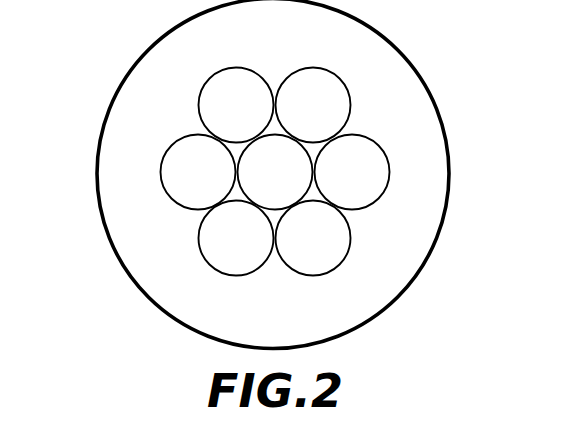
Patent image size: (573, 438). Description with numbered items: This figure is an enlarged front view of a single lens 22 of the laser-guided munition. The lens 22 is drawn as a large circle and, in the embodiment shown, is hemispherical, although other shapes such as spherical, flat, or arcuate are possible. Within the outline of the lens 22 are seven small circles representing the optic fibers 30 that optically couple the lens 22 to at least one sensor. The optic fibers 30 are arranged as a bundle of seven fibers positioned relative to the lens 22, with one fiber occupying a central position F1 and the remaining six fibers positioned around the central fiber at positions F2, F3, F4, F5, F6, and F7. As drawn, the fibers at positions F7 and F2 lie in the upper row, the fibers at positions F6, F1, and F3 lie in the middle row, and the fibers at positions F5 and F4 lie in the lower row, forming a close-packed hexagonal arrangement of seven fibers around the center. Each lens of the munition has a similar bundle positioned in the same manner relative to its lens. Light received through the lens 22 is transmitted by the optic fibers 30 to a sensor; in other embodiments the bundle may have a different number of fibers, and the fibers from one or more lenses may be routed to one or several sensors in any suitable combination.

The lens 22 is at (434, 96).
The optic fibers 30 is at (231, 151).
The central position F1 is at (275, 172).
The fiber position F2 is at (313, 105).
The fiber position F3 is at (352, 172).
The fiber position F4 is at (313, 238).
The fiber position F5 is at (236, 238).
The fiber position F6 is at (198, 172).
The fiber position F7 is at (236, 105).